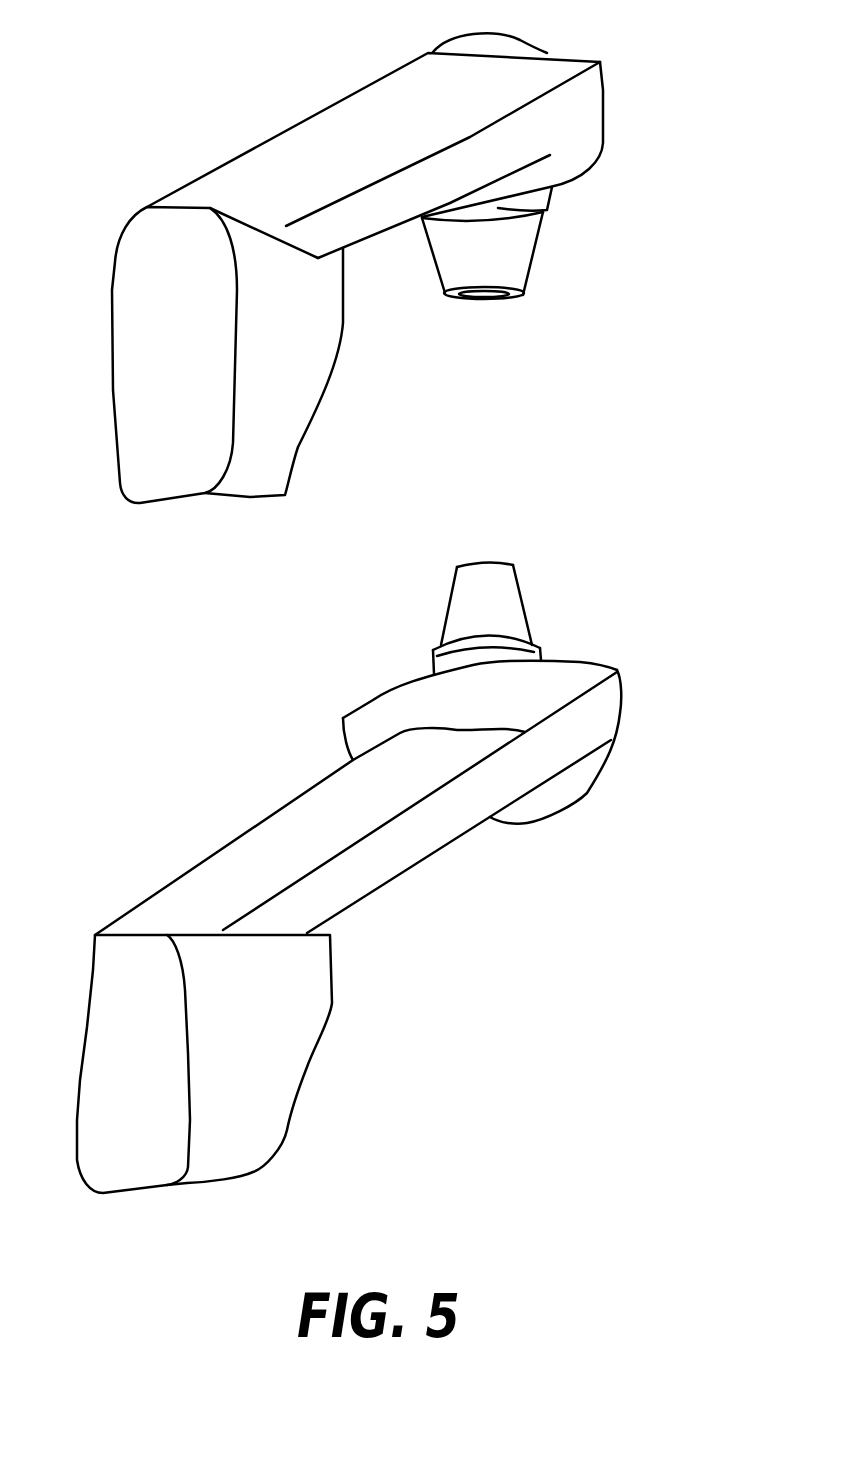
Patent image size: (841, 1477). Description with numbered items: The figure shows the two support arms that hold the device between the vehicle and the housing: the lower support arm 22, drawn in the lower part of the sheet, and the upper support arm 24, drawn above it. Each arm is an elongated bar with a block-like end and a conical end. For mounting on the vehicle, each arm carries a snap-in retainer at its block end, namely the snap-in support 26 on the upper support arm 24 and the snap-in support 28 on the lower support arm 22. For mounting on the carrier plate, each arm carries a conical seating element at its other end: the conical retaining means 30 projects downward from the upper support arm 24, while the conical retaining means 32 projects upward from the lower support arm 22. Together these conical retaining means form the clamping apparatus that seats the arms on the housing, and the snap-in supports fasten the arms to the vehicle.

The lower support arm 22 is at (293, 828).
The upper support arm 24 is at (362, 177).
The snap-in support 26 is at (122, 205).
The snap-in support 28 is at (126, 891).
The conical retaining means 30 is at (518, 270).
The conical retaining means 32 is at (513, 607).